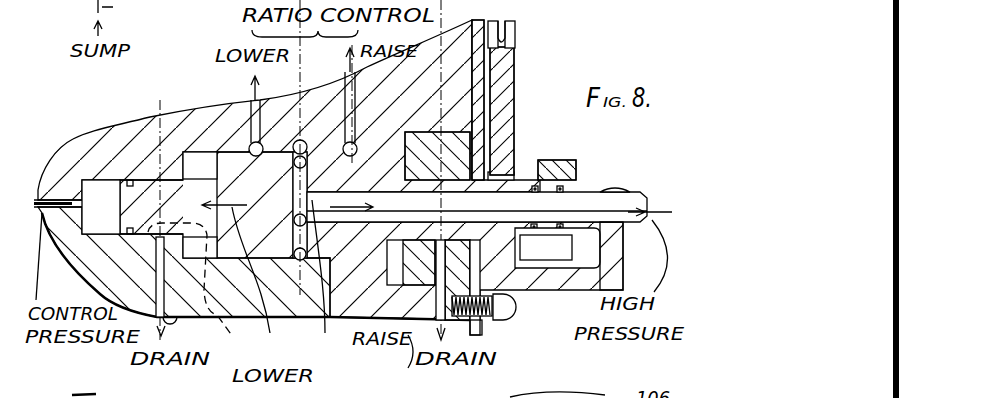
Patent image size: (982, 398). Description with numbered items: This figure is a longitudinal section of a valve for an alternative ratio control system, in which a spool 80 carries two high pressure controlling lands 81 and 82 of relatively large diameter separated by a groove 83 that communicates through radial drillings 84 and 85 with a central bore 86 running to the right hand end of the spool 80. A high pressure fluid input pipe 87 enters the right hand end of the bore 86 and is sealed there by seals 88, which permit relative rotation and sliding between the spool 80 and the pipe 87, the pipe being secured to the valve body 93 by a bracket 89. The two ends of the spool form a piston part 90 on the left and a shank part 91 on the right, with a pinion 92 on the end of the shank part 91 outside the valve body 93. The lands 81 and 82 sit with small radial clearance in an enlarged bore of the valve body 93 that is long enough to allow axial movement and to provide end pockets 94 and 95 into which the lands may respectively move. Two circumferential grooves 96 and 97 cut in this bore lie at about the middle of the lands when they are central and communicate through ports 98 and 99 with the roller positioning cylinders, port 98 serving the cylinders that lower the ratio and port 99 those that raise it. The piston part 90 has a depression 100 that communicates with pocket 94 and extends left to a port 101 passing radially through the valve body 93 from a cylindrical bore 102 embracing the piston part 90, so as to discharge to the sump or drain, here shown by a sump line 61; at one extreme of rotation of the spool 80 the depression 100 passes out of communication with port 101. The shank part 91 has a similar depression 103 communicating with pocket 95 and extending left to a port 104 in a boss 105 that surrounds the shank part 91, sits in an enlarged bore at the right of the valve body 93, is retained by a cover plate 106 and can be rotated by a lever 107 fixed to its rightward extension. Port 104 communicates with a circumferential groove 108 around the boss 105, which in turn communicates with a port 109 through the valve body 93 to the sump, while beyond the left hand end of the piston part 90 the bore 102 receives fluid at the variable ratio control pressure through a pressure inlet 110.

The sump line 61 is at (116, 18).
The spool 80 is at (247, 205).
The high pressure controlling land 81 is at (265, 283).
The high pressure controlling land 82 is at (400, 290).
The groove 83 is at (304, 152).
The radial drilling 84 is at (365, 245).
The radial drilling 85 is at (317, 279).
The central bore 86 is at (489, 209).
The high pressure fluid input pipe 87 is at (582, 196).
The seals 88 is at (536, 186).
The bracket 89 is at (612, 278).
The piston part 90 is at (143, 187).
The shank part 91 is at (557, 249).
The pinion 92 is at (568, 175).
The valve body 93 is at (421, 333).
The end pocket 94 is at (205, 160).
The end pocket 95 is at (455, 153).
The circumferential groove 96 is at (270, 116).
The circumferential groove 97 is at (383, 212).
The port 98 is at (251, 117).
The port 99 is at (348, 97).
The depression 100 is at (203, 291).
The port 101 is at (170, 320).
The cylindrical bore 102 is at (110, 226).
The depression 103 is at (497, 327).
The port 104 is at (506, 292).
The boss 105 is at (397, 167).
The cover plate 106 is at (477, 72).
The lever 107 is at (498, 82).
The circumferential groove 108 is at (488, 320).
The port 109 is at (480, 338).
The pressure inlet 110 is at (70, 187).